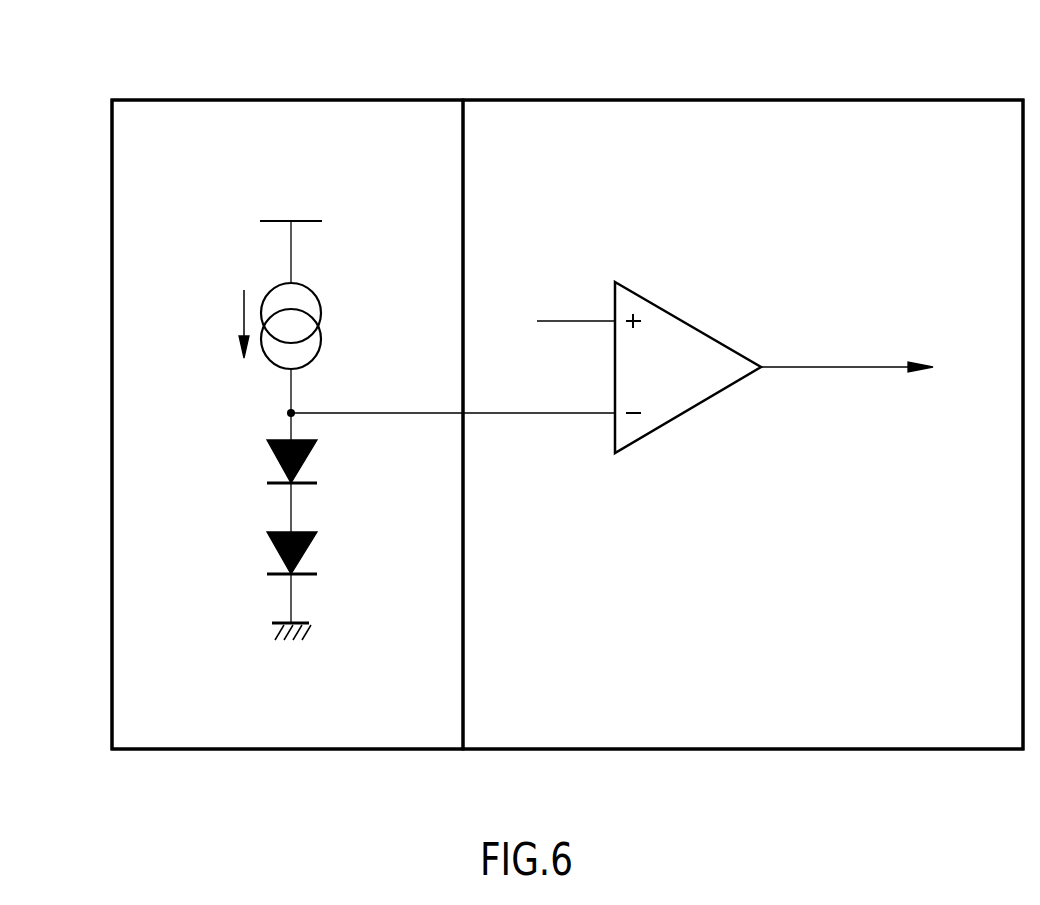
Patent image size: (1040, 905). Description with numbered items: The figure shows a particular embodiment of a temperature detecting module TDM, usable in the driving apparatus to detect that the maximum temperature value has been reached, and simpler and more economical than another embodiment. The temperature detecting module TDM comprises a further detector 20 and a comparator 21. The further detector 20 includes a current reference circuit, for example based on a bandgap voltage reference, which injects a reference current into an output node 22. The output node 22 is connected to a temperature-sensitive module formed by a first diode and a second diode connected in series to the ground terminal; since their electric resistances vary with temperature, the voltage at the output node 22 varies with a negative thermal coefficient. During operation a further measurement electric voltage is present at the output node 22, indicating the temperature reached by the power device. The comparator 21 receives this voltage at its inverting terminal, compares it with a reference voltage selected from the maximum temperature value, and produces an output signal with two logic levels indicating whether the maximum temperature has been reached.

The further detector 20 is at (161, 148).
The comparator 21 is at (514, 147).
The output node 22 is at (291, 413).
The temperature detecting module TDM is at (802, 100).